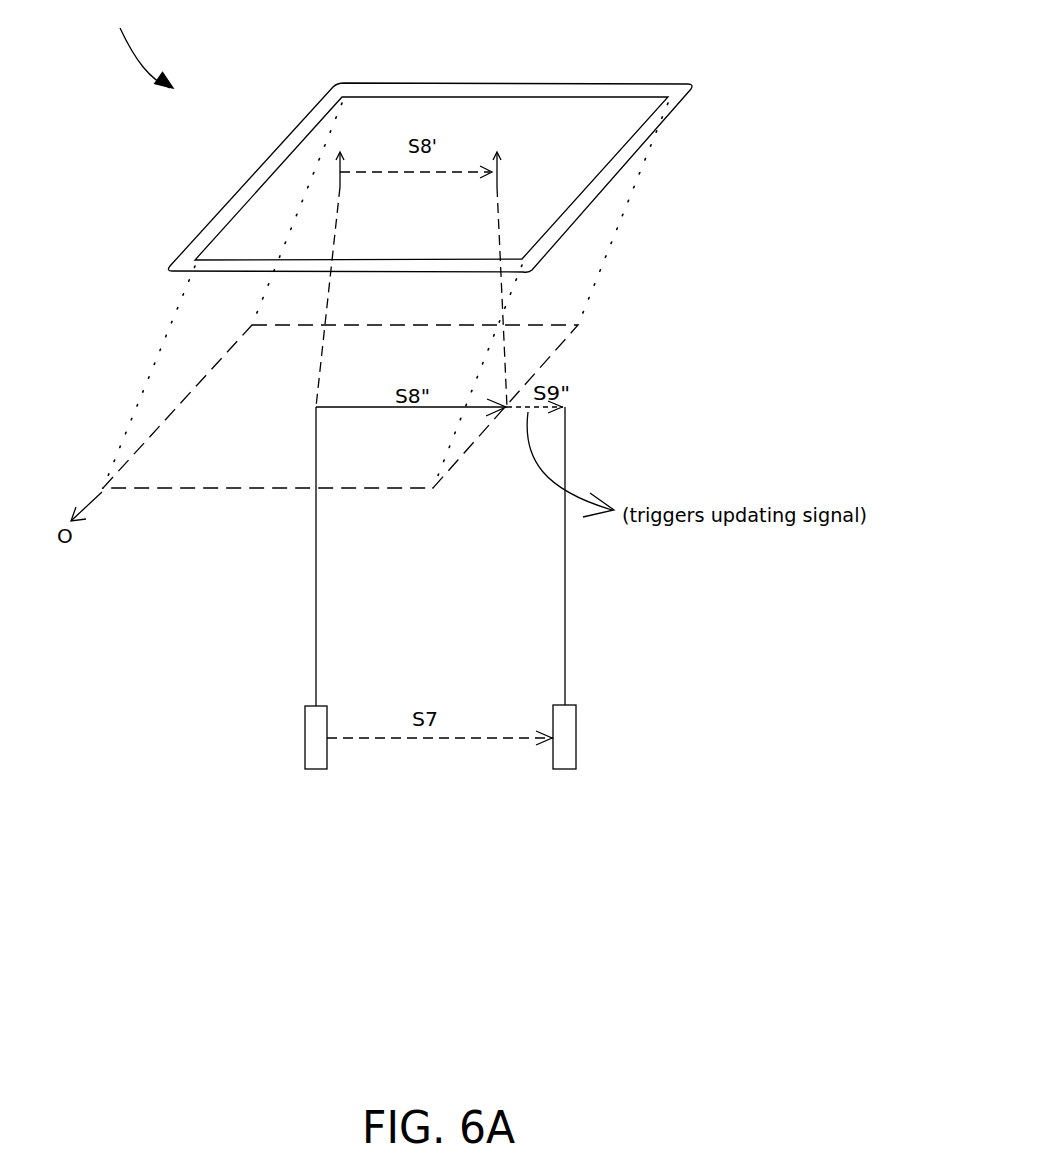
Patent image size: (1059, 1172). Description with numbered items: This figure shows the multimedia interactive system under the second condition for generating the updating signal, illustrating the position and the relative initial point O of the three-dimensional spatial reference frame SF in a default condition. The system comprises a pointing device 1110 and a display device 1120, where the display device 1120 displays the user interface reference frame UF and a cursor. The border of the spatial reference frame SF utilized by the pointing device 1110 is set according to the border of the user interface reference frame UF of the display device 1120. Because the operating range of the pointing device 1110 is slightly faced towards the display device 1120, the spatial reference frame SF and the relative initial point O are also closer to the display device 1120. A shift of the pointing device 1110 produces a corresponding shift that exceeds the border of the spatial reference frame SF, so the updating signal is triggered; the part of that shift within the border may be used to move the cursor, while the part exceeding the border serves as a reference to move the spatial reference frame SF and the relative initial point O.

The display device 1120 is at (692, 86).
The pointing device 1110 is at (315, 769).
The user interface reference frame UF is at (602, 172).
The 3D spatial reference frame SF is at (558, 352).